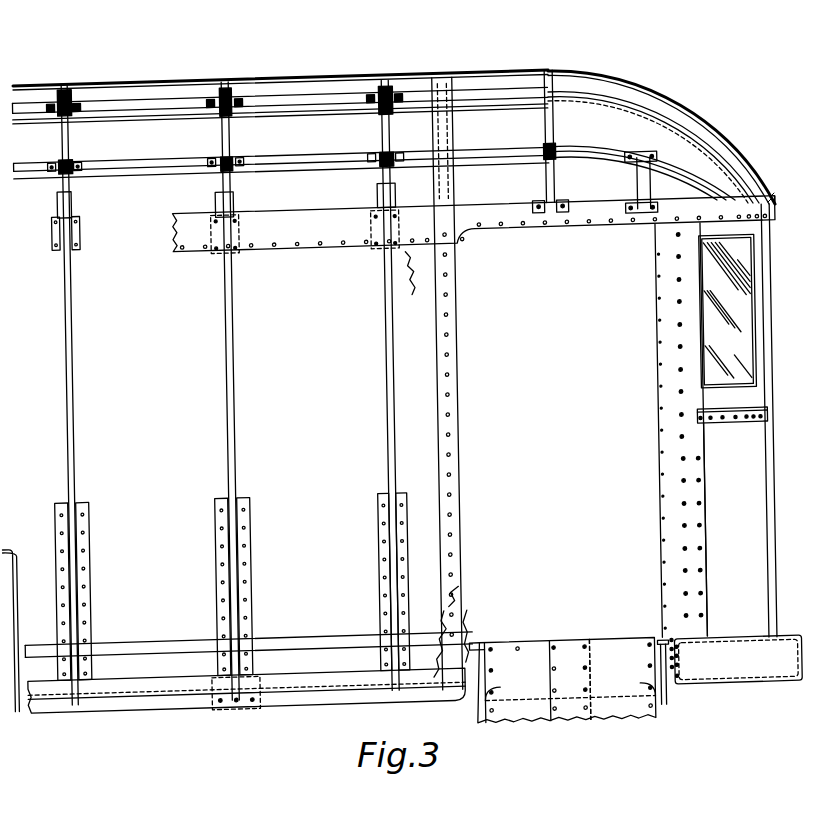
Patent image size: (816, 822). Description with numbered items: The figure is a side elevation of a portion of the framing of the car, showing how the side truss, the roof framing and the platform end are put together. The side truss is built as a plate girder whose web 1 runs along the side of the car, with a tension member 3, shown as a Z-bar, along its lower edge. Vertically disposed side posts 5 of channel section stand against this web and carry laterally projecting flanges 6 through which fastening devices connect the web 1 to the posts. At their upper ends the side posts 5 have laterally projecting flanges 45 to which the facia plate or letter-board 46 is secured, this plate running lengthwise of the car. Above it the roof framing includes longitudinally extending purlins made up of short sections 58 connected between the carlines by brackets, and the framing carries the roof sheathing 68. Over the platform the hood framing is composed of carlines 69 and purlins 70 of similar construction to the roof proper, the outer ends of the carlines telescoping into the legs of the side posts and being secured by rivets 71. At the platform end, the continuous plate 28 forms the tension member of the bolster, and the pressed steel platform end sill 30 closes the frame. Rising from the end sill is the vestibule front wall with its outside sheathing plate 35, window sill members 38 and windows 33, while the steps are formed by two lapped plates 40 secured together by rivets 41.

The web of the plate girder 1 is at (440, 383).
The tension member 3 is at (284, 702).
The side posts 5 is at (76, 294).
The laterally projecting flanges 6 is at (85, 553).
The continuous plate 28 is at (219, 706).
The platform end sill 30 is at (738, 659).
The windows 33 is at (728, 311).
The outside sheathing plate 35 is at (703, 430).
The window sill members 38 is at (744, 432).
The plates 40 is at (562, 681).
The rivets 41 is at (581, 674).
The laterally projecting flanges 45 is at (83, 224).
The facia plate 46 is at (305, 244).
The purlin sections 58 is at (320, 97).
The roof sheathing 68 is at (366, 77).
The carlines 69 is at (553, 134).
The purlins 70 is at (624, 104).
The rivets 71 is at (218, 199).